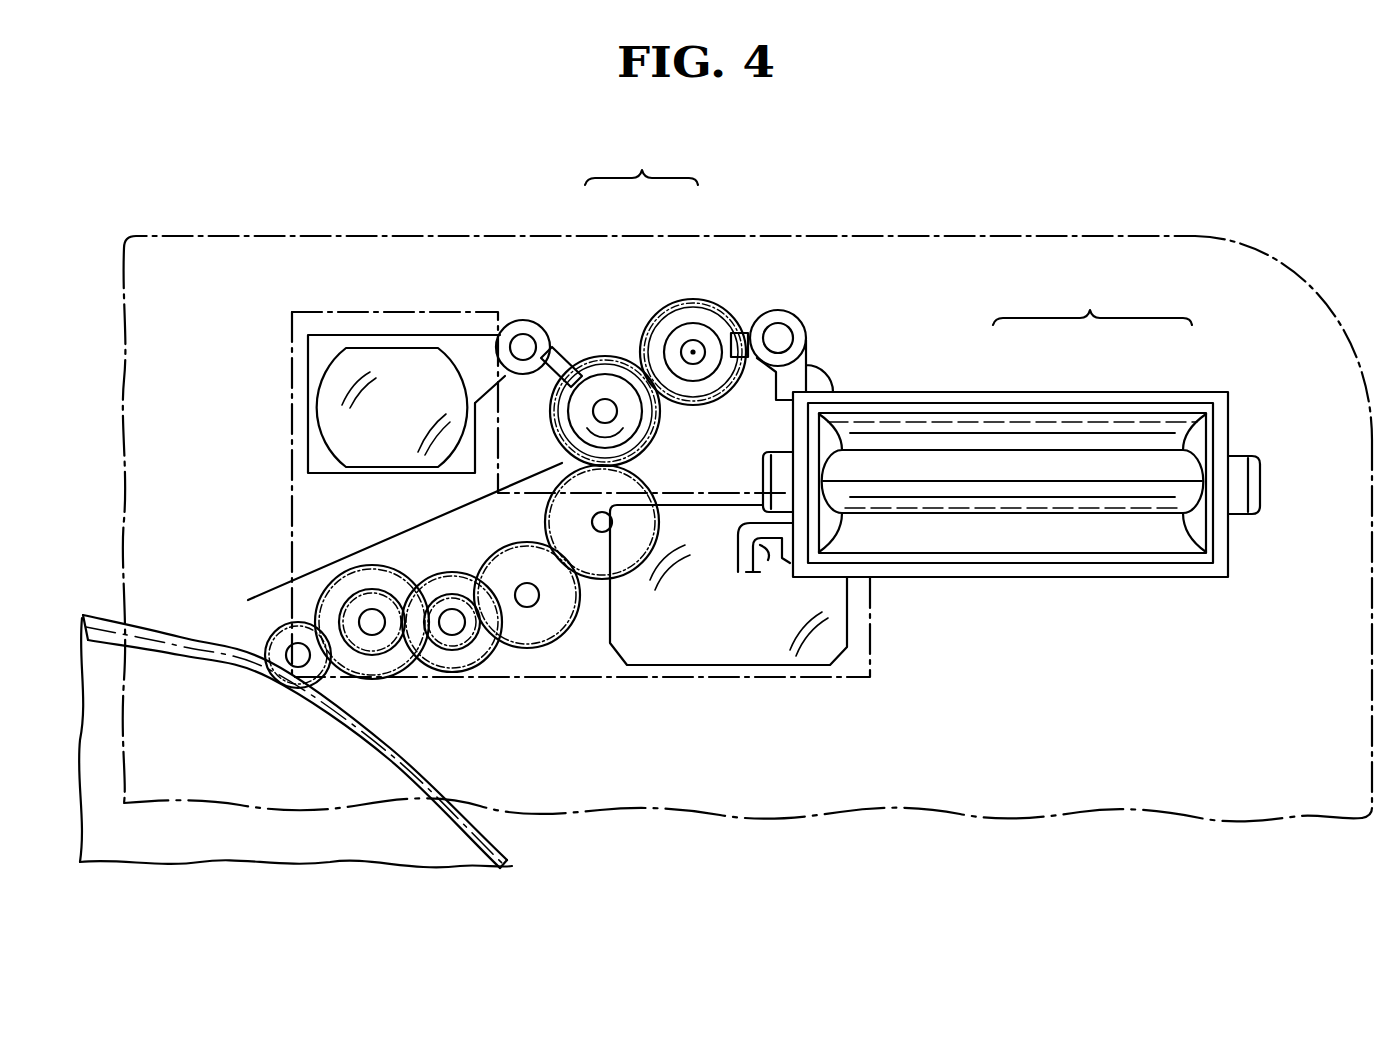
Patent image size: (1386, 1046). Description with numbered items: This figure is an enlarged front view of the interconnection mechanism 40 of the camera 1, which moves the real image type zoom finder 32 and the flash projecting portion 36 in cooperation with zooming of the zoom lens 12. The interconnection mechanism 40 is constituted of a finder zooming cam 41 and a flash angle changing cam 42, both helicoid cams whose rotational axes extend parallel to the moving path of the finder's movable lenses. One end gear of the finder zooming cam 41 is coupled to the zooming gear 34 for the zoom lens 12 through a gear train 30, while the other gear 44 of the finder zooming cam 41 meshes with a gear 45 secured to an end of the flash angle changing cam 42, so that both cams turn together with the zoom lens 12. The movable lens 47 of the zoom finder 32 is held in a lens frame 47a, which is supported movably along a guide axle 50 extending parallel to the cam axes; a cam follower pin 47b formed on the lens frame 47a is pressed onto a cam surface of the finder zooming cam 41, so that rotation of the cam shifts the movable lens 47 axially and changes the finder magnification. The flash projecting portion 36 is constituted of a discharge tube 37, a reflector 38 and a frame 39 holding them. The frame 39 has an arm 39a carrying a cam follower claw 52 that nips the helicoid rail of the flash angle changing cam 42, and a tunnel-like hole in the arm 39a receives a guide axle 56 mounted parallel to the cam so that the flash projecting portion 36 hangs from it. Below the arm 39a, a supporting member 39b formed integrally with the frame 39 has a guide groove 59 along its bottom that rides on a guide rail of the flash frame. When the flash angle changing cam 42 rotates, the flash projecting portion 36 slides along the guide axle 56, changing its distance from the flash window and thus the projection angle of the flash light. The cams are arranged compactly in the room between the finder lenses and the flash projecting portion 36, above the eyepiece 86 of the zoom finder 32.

The camera 1 is at (1252, 262).
The zoom lens 12 is at (386, 752).
The gear train 30 is at (410, 530).
The real image type zoom finder 32 is at (348, 312).
The zooming gear 34 is at (193, 640).
The flash projecting portion 36 is at (1011, 426).
The discharge tube 37 is at (1012, 470).
The reflector 38 is at (1092, 403).
The frame 39 is at (1175, 392).
The arm 39a is at (810, 326).
The supporting member 39b is at (738, 562).
The interconnection mechanism 40 is at (648, 300).
The finder zooming cam 41 is at (620, 360).
The flash angle changing cam 42 is at (684, 300).
The gear 44 is at (543, 418).
The gear 45 is at (696, 412).
The movable lens 47 is at (330, 412).
The lens frame 47a is at (510, 326).
The cam follower pin 47b is at (560, 352).
The guide axle 50 is at (530, 322).
The cam follower claw 52 is at (742, 330).
The guide axle 56 is at (783, 325).
The guide groove 59 is at (768, 565).
The eyepiece 86 is at (722, 665).